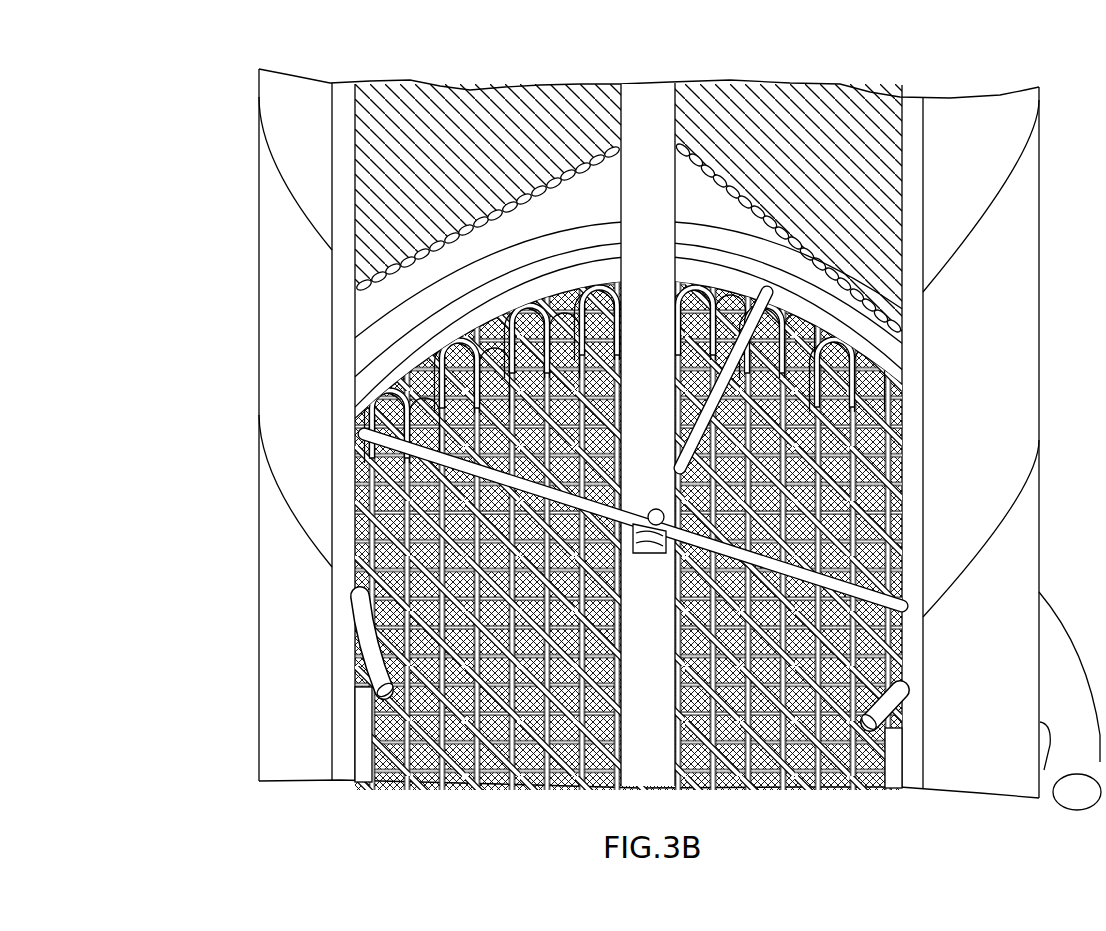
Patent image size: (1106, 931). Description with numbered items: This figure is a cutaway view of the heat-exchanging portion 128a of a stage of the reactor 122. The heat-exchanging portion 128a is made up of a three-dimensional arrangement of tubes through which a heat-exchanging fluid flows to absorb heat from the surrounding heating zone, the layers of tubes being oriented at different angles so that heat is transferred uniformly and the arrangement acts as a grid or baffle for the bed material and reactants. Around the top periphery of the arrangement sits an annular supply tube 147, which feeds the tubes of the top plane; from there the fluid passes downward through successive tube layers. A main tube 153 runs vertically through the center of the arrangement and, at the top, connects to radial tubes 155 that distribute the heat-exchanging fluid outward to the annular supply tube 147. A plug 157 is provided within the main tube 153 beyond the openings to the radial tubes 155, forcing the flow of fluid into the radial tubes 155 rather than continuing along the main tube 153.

The reactor 122 is at (273, 352).
The heat-exchanging portion 128a is at (385, 563).
The annular supply tube 147 is at (802, 297).
The main tube 153 is at (656, 93).
The radial tubes 155 is at (757, 322).
The plug 157 is at (672, 531).